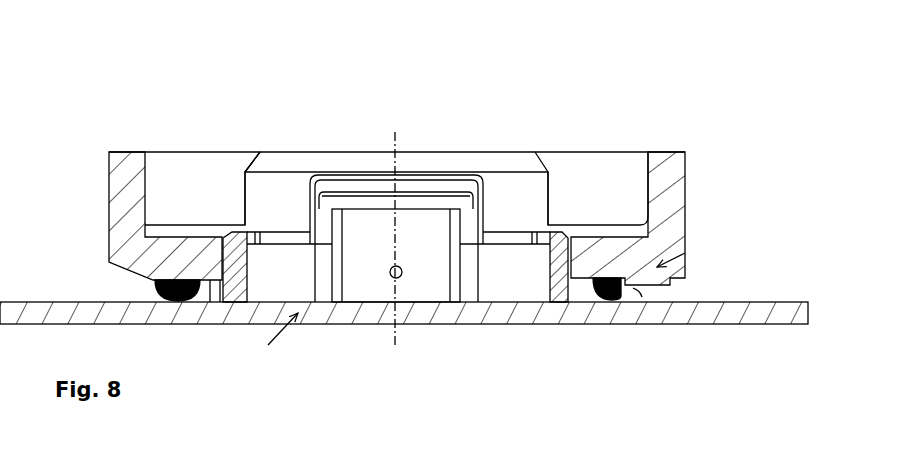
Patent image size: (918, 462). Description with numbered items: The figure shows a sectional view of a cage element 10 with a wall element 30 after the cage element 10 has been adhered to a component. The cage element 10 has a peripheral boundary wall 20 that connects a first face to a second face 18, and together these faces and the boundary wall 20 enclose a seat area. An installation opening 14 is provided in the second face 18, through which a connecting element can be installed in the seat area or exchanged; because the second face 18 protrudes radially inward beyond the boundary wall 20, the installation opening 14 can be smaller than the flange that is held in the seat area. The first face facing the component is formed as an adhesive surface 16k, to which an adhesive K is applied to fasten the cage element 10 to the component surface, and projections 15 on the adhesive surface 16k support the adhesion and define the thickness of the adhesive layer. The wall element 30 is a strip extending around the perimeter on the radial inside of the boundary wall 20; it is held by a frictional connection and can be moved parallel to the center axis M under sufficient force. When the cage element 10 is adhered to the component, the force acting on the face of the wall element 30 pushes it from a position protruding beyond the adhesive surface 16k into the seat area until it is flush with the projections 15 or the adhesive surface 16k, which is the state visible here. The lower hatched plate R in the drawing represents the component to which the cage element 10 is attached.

The cage element 10 is at (670, 150).
The installation opening 14 is at (205, 167).
The projections 15 is at (653, 280).
The adhesive surface 16k is at (211, 280).
The second face 18 is at (133, 153).
The peripheral boundary wall 20 is at (110, 183).
The wall element 30 is at (237, 280).
The adhesive K is at (563, 280).
The center axis M is at (410, 223).
The carrier plate R is at (782, 308).